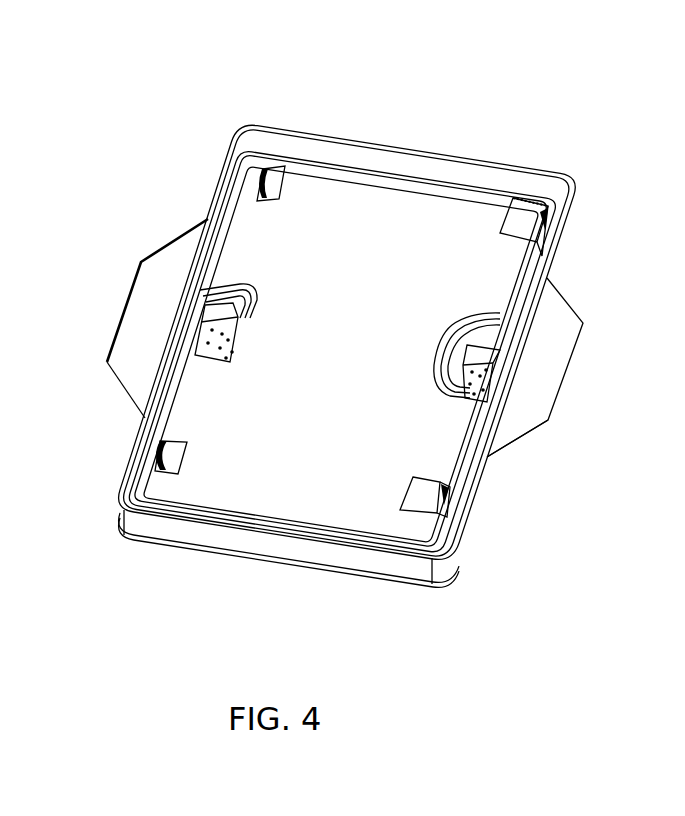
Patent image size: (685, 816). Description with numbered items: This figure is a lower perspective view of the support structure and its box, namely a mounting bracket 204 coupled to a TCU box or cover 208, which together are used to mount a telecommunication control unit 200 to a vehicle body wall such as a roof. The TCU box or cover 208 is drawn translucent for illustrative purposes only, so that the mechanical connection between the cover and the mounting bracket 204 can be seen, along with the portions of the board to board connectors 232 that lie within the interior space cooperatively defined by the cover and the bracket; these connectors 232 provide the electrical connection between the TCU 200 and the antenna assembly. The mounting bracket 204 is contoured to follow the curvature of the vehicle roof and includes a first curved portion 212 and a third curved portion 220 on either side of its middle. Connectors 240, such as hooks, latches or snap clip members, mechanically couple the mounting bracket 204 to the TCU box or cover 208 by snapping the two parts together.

The telecommunication control unit 200 is at (548, 112).
The TCU box or cover 208 is at (283, 227).
The connectors 232 is at (478, 345).
The first curved portion 212 is at (558, 373).
The mounting bracket 204 is at (513, 435).
The third curved portion 220 is at (138, 352).
The connectors 240 is at (166, 462).